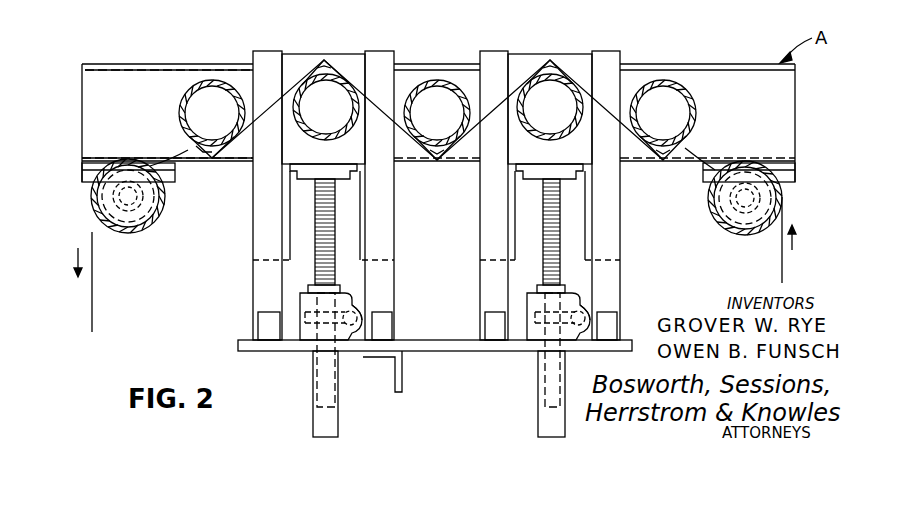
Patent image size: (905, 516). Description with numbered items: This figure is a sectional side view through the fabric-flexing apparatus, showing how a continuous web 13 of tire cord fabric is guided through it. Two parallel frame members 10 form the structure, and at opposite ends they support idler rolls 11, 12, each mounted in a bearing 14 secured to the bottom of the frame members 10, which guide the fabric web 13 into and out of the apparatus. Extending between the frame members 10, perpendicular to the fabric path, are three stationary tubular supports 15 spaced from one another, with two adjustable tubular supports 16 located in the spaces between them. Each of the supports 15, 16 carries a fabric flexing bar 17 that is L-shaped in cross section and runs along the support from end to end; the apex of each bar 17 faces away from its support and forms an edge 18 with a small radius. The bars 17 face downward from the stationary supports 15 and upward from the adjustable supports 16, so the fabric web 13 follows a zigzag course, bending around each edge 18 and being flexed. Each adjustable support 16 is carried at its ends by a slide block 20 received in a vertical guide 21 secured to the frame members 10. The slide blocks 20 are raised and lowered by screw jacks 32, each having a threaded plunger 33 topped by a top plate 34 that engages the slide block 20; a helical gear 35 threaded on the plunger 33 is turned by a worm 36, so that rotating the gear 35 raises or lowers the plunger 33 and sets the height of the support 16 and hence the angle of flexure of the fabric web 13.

The frame member 10 is at (85, 86).
The idler roll 11 is at (715, 225).
The idler roll 12 is at (155, 222).
The web of tire cord fabric 13 is at (178, 155).
The bearing 14 is at (80, 179).
The stationary tubular support 15 is at (197, 86).
The adjustable tubular support 16 is at (312, 134).
The fabric flexing bar 17 is at (197, 149).
The edge 18 is at (325, 60).
The slide block 20 is at (295, 58).
The vertical guide 21 is at (258, 62).
The screw jack 32 is at (300, 300).
The threaded plunger 33 is at (330, 275).
The top plate 34 is at (350, 178).
The helical gear 35 is at (310, 325).
The worm 36 is at (357, 337).